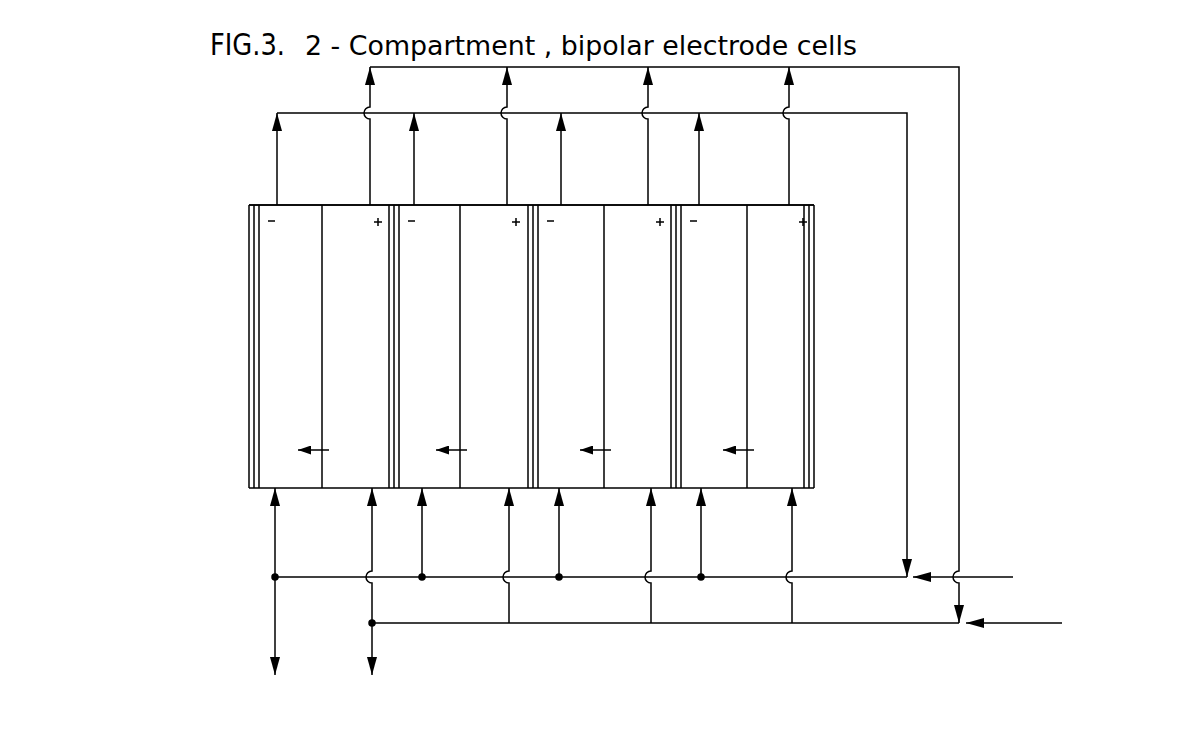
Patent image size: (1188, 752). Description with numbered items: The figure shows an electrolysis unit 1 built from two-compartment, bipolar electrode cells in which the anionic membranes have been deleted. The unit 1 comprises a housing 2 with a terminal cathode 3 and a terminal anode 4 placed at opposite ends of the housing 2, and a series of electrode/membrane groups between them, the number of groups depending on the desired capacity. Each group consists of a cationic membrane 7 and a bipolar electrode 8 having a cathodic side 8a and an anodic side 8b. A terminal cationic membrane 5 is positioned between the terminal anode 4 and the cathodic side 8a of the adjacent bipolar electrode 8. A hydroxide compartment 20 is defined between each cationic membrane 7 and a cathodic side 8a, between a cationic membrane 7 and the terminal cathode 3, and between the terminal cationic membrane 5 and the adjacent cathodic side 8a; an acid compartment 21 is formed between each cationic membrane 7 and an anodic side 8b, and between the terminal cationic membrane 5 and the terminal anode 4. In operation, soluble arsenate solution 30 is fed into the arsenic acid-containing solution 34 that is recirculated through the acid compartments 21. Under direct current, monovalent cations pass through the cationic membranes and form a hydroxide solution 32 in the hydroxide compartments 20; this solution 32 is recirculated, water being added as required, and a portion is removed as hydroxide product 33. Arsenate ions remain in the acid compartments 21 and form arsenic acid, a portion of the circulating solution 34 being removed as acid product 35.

The electrolysis unit 1 is at (243, 442).
The housing 2 is at (268, 205).
The terminal cathode 3 is at (249, 323).
The terminal anode 4 is at (815, 316).
The terminal cationic membrane 5 is at (748, 336).
The cationic membrane 7 is at (323, 326).
The bipolar electrode 8 is at (400, 333).
The cathodic side 8a is at (399, 369).
The anodic side 8b is at (389, 352).
The hydroxide compartment 20 is at (498, 328).
The acid compartment 21 is at (552, 342).
The soluble arsenate solution 30 is at (1070, 617).
The hydroxide solution 32 is at (682, 361).
The hydroxide product 33 is at (210, 641).
The arsenic acid-containing solution 34 is at (661, 359).
The acid product 35 is at (450, 664).